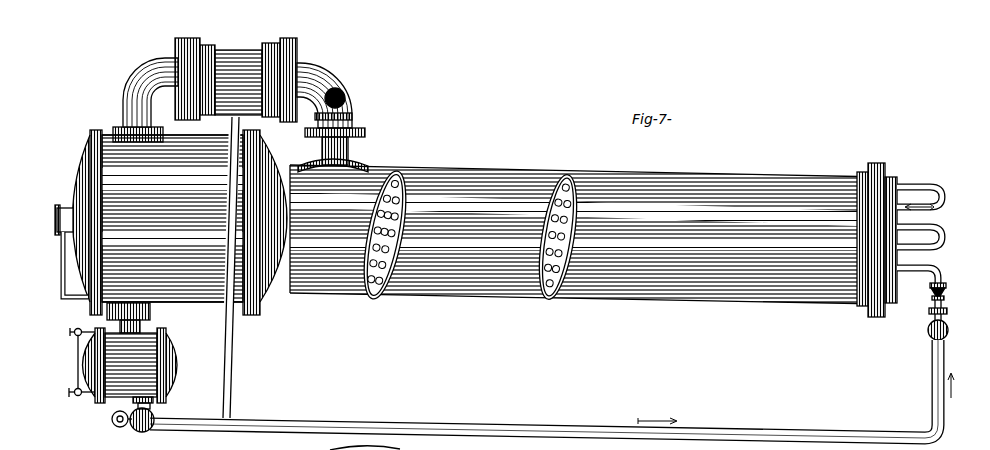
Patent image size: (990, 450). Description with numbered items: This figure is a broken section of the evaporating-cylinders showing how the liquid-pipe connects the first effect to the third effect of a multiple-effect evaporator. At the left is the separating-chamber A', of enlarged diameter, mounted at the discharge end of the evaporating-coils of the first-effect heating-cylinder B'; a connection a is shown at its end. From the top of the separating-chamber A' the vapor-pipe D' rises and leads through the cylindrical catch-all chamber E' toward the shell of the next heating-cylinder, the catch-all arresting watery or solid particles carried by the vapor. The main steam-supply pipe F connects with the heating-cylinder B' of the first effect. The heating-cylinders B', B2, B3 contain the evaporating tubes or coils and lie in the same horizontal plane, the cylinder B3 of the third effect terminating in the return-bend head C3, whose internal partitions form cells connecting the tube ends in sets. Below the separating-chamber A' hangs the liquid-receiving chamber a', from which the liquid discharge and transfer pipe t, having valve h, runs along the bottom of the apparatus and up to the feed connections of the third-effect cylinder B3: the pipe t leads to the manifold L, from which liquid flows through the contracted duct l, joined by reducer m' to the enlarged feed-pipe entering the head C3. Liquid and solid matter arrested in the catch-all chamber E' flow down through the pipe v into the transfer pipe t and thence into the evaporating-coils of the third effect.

The separating-chamber A' is at (180, 225).
The inlet connection a is at (67, 242).
The vapor-pipe D' is at (142, 100).
The catch-all chamber E' is at (271, 100).
The main steam-supply pipe F is at (346, 99).
The heating-cylinder B' is at (352, 233).
The heating-cylinder B2 is at (497, 234).
The heating-cylinder B3 is at (718, 237).
The return-bend head C3 is at (895, 180).
The reducer m' is at (947, 294).
The contracted duct l is at (946, 312).
The manifold L is at (943, 327).
The liquid discharge and transfer pipe t is at (552, 389).
The valve h is at (114, 418).
The small drum a' is at (123, 376).
The pipe v is at (232, 351).